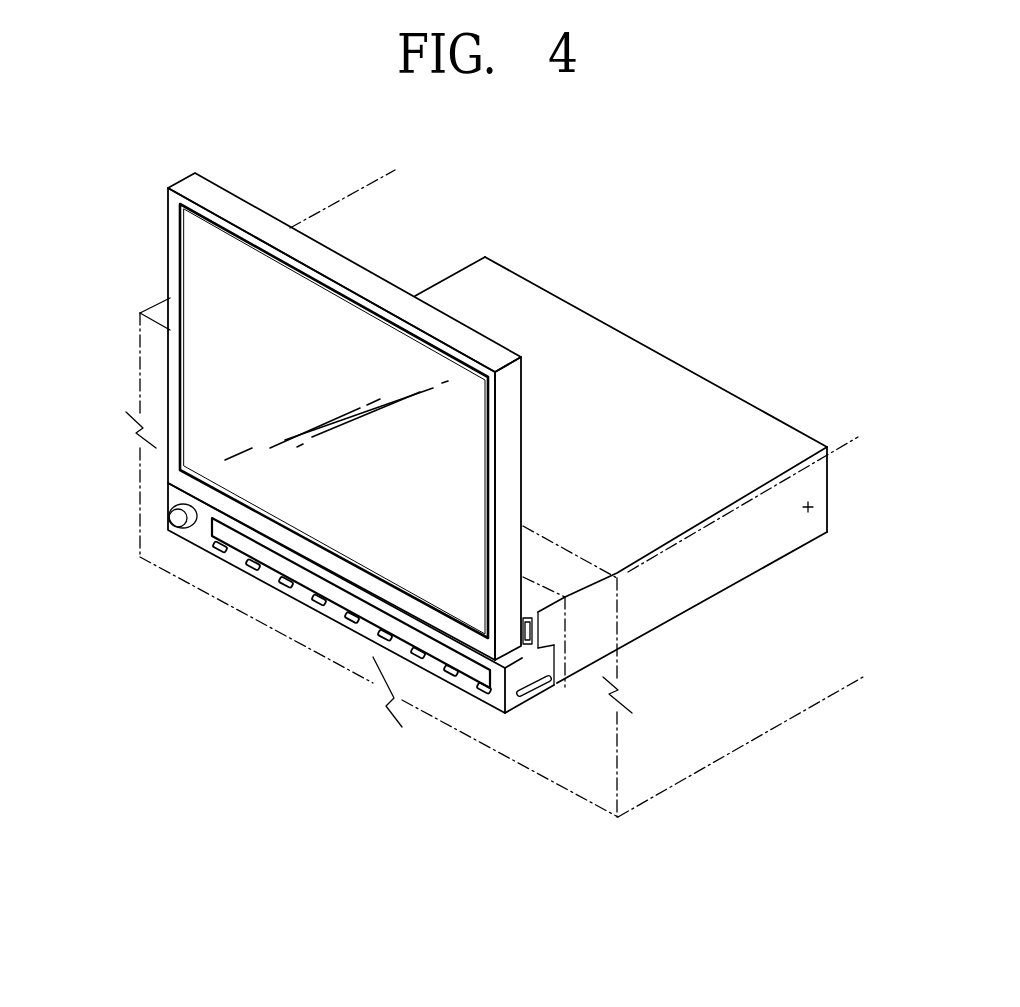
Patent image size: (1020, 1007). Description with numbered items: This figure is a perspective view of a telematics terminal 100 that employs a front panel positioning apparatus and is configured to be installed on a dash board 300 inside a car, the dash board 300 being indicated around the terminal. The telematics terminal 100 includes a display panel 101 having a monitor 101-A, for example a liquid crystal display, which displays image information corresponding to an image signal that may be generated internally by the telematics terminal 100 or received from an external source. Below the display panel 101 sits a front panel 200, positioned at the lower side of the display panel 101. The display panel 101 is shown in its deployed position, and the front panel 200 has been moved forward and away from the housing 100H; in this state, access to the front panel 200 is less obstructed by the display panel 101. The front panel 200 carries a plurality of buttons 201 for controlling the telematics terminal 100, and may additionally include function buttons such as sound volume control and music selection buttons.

The telematics terminal 100 is at (648, 363).
The housing 100H is at (812, 505).
The display panel 101 is at (170, 276).
The monitor 101-A is at (187, 363).
The front panel 200 is at (233, 558).
The buttons 201 is at (216, 547).
The dash board 300 is at (742, 747).